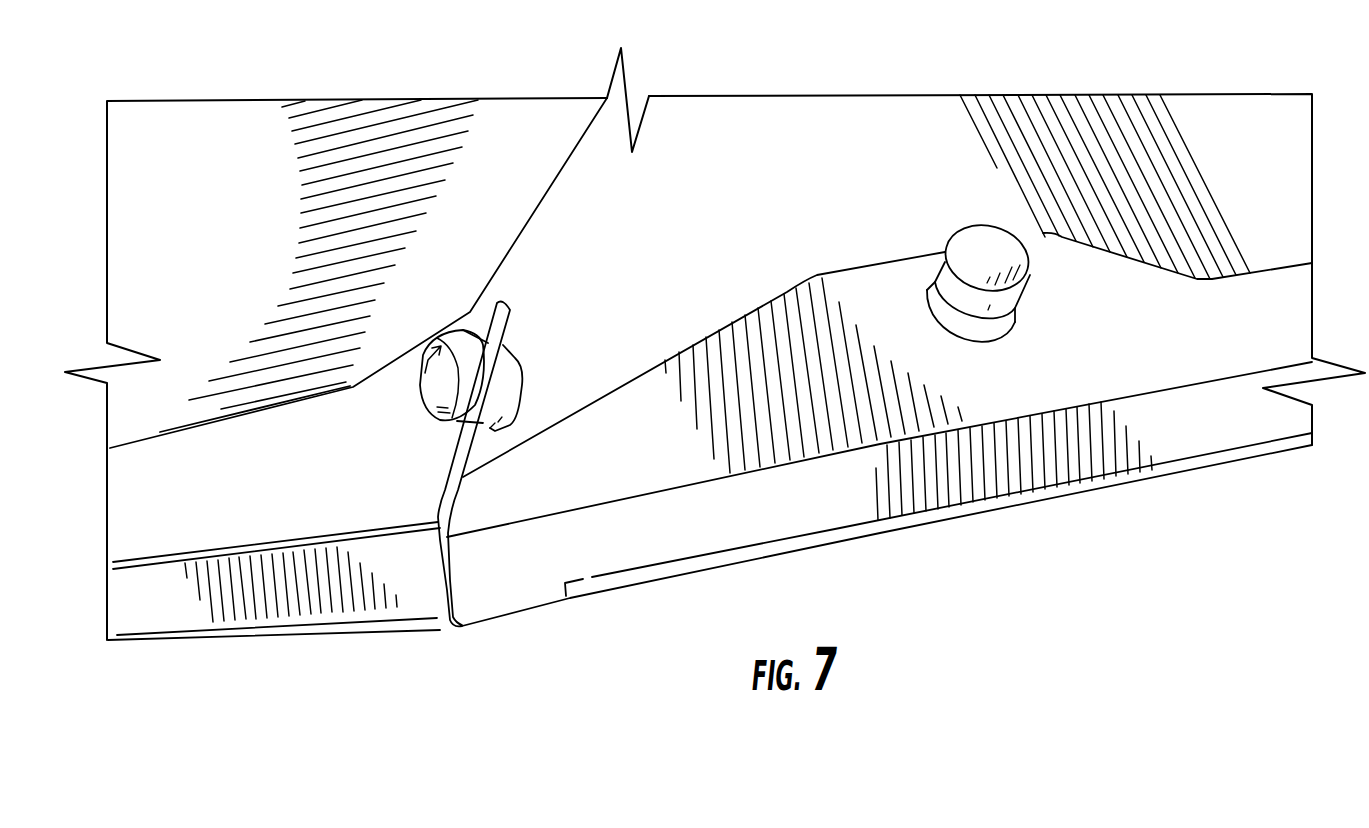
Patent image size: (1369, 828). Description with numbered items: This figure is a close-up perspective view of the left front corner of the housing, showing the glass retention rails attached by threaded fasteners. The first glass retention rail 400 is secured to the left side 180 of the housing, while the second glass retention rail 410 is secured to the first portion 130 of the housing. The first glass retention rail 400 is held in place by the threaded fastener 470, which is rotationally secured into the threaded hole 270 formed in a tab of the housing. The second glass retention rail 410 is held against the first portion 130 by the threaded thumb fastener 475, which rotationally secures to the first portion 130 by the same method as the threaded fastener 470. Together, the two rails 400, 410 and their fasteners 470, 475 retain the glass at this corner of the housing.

The first portion 130 is at (1297, 181).
The left side 180 is at (517, 219).
The threaded hole 270 is at (524, 372).
The first glass retention rail 400 is at (323, 680).
The second glass retention rail 410 is at (1030, 503).
The threaded fastener 470 is at (410, 400).
The threaded thumb fastener 475 is at (1027, 238).